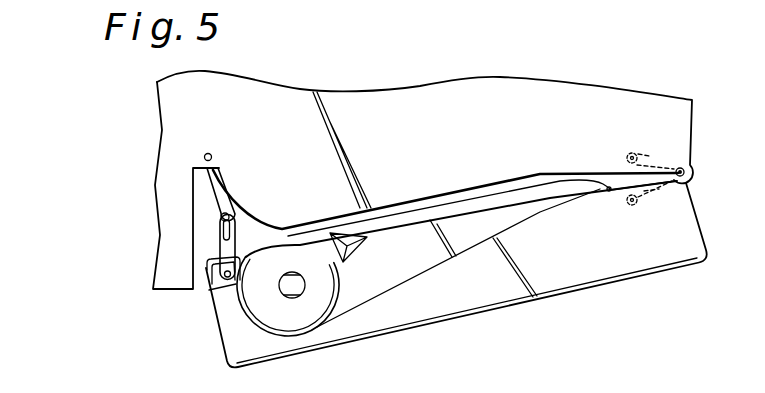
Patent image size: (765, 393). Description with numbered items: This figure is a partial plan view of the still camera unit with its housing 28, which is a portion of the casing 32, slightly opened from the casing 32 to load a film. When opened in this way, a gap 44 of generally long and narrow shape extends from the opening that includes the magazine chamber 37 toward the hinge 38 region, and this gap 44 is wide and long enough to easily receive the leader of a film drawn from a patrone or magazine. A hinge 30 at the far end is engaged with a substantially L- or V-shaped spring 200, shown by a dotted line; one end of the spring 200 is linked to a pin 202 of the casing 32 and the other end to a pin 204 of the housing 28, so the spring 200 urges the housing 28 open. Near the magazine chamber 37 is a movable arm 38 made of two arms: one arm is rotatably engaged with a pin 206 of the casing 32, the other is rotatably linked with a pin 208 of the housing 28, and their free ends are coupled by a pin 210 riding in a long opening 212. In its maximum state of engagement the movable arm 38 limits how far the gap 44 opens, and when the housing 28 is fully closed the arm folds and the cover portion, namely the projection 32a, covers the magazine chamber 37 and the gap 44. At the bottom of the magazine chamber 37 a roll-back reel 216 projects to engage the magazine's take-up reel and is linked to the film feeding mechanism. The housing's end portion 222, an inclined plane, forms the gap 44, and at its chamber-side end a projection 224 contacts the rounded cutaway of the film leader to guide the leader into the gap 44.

The housing 28 is at (435, 297).
The hinge 30 is at (688, 170).
The casing 32 is at (608, 112).
The projection 32a is at (293, 156).
The magazine chamber 37 is at (263, 306).
The movable arm 38 is at (223, 231).
The gap 44 is at (500, 183).
The spring 200 is at (652, 191).
The pin 202 is at (634, 153).
The pin 204 is at (630, 206).
The pin 206 is at (208, 153).
The pin 208 is at (227, 282).
The pin 210 is at (224, 216).
The long opening 212 is at (243, 226).
The roll-back reel 216 is at (296, 297).
The end portion 222 is at (413, 216).
The projection 224 is at (353, 247).